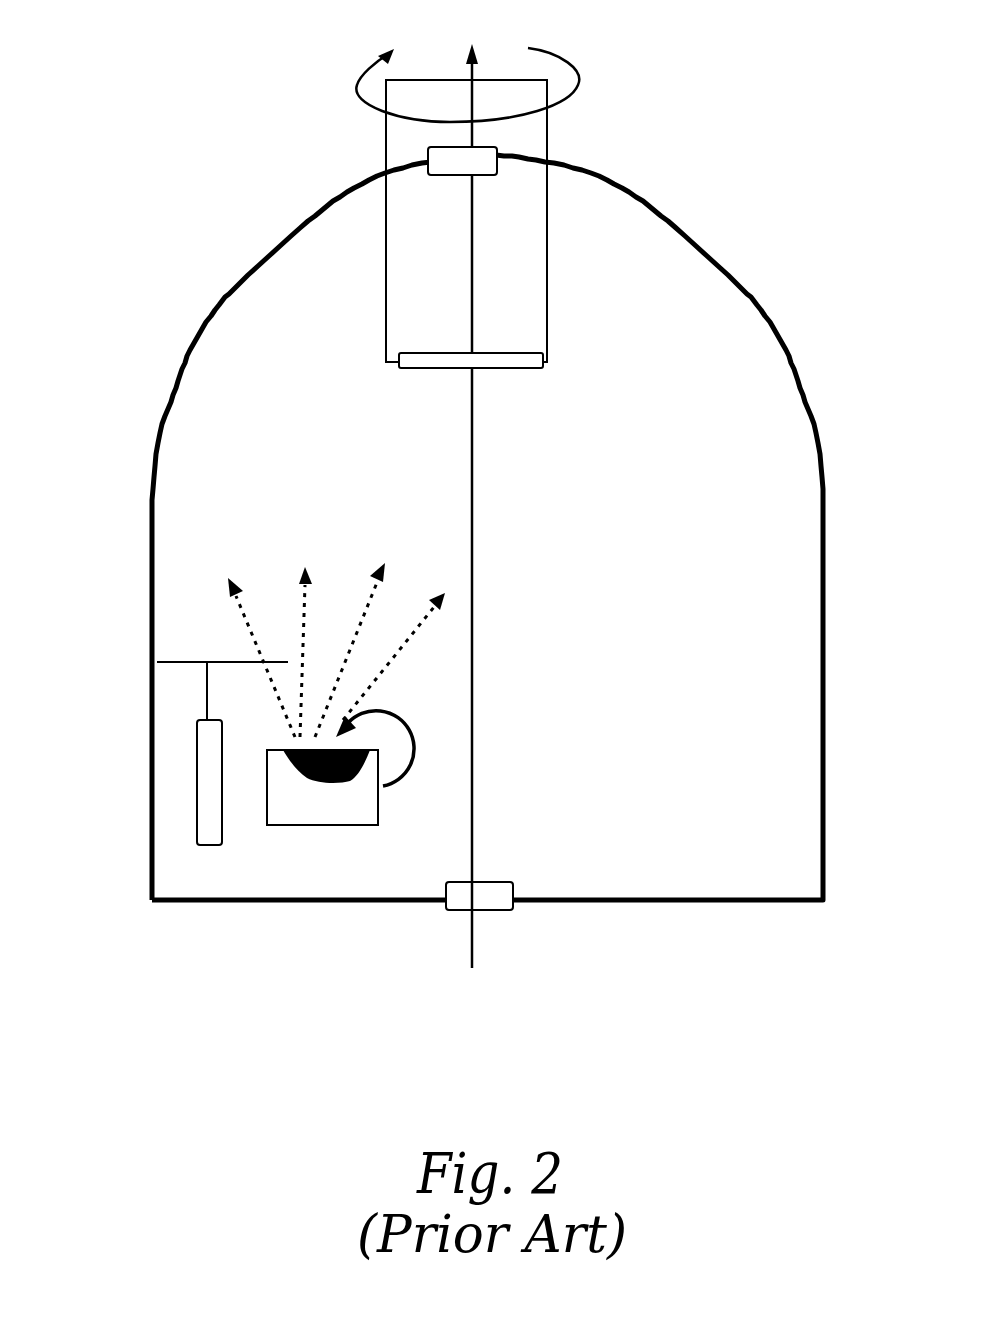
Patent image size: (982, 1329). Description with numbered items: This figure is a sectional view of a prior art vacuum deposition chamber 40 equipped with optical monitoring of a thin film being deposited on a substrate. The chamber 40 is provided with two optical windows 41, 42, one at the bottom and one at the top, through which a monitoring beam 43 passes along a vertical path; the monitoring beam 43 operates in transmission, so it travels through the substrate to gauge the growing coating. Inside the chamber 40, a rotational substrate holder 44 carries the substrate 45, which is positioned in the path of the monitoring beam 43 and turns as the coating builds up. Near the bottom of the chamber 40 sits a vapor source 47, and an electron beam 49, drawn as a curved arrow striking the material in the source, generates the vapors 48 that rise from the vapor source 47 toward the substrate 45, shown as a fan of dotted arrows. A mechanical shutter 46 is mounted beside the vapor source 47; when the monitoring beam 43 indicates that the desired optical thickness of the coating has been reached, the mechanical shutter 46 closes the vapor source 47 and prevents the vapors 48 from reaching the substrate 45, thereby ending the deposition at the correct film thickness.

The vacuum deposition chamber 40 is at (774, 338).
The optical window 41 is at (513, 993).
The optical window 42 is at (612, 130).
The monitoring beam 43 is at (474, 780).
The rotational substrate holder 44 is at (386, 282).
The substrate 45 is at (543, 353).
The mechanical shutter 46 is at (177, 661).
The vapor source 47 is at (323, 942).
The vapors 48 is at (368, 597).
The electron beam 49 is at (413, 747).